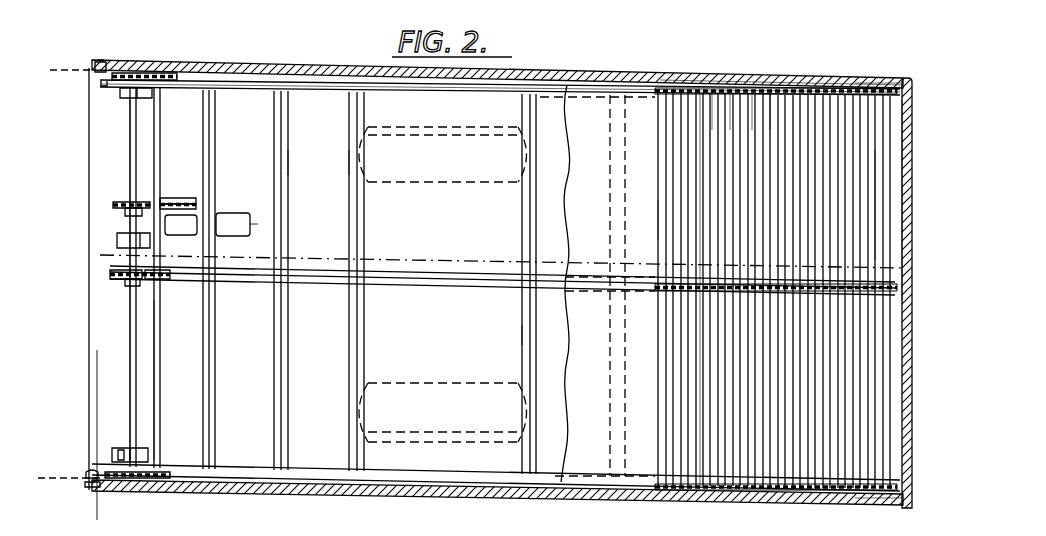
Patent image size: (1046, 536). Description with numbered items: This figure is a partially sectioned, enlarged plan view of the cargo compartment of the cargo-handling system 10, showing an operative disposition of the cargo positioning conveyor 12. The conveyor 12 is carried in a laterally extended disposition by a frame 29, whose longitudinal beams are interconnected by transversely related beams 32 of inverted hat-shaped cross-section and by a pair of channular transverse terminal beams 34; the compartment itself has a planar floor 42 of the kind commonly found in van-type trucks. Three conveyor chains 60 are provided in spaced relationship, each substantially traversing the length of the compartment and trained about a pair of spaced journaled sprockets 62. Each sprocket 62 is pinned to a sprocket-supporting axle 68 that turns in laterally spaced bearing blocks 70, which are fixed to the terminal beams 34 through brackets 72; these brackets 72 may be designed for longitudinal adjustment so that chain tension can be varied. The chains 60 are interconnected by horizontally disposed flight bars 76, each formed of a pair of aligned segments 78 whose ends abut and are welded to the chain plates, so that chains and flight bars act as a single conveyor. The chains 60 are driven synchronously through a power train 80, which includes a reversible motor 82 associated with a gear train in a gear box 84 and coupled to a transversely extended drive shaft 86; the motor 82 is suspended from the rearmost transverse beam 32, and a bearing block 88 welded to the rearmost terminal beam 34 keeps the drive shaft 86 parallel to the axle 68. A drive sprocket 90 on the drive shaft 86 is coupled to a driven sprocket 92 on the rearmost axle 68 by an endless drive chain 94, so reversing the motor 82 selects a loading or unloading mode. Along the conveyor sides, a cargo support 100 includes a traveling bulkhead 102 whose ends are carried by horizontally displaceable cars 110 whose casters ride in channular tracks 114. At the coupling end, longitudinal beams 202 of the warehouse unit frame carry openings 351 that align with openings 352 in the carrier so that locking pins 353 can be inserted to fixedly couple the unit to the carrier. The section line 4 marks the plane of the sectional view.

The cargo-handling system 10 is at (117, 380).
The cargo positioning conveyor 12 is at (667, 73).
The frame 29 is at (787, 78).
The transversely related beams 32 is at (290, 165).
The transverse terminal beams 34 is at (157, 141).
The section line 4- 4 is at (74, 232).
The planar floor 42 is at (600, 140).
The chain 60 is at (700, 88).
The sprockets 62 is at (135, 284).
The sprocket-supporting axle 68 is at (130, 324).
The bearing blocks 70 is at (120, 450).
The brackets 72 is at (148, 90).
The flight bars 76 is at (647, 224).
The aligned segments 78 is at (752, 90).
The power train 80 is at (229, 207).
The reversible motor 82 is at (252, 228).
The gear box 84 is at (180, 227).
The drive shaft 86 is at (178, 203).
The bearing block 88 is at (183, 200).
The drive sprocket 90 is at (190, 178).
The driven sprocket 92 is at (128, 213).
The endless drive chain 94 is at (115, 204).
The cargo support 100 is at (891, 239).
The traveling bulkhead 102 is at (878, 204).
The cars 110 is at (877, 80).
The channular track 114 is at (583, 86).
The longitudinal beams 202 is at (58, 73).
The openings 351 is at (110, 65).
The openings 352 is at (92, 65).
The locking pins 353 is at (102, 58).